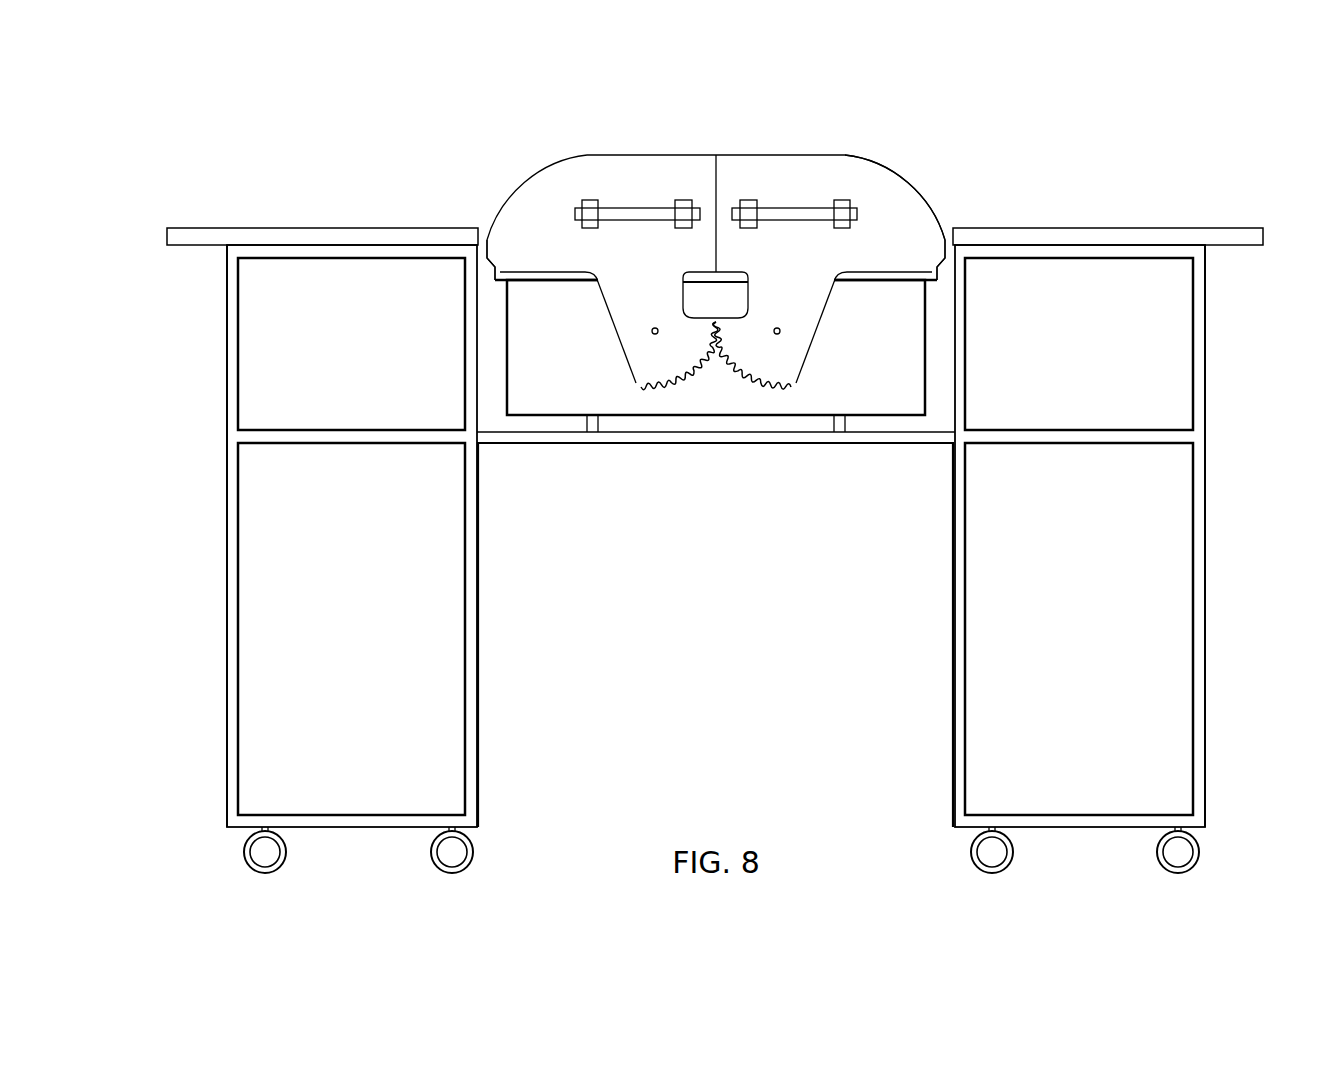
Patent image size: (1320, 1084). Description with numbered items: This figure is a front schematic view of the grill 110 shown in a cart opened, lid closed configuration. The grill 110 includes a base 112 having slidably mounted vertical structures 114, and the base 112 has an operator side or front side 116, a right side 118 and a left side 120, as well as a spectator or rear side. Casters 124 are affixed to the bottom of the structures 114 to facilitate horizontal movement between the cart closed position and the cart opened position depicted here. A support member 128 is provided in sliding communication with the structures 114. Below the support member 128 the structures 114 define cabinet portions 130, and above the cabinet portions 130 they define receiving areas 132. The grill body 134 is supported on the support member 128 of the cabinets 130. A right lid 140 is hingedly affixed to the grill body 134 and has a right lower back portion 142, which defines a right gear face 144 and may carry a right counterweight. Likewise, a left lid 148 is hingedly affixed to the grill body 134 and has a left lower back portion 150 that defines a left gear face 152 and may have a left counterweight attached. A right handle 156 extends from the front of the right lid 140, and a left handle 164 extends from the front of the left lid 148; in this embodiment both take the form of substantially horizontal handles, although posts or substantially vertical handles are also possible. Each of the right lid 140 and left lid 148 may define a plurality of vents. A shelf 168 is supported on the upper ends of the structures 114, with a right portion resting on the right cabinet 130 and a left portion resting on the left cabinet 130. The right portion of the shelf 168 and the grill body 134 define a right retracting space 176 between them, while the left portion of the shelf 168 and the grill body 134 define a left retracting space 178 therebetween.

The grill 110 is at (448, 130).
The base 112 is at (165, 645).
The vertical structures 114 is at (250, 575).
The front side 116 is at (697, 654).
The right side 118 is at (1206, 708).
The left side 120 is at (227, 708).
The casters 124 is at (265, 872).
The support member 128 is at (652, 445).
The cabinet portions 130 is at (333, 644).
The receiving areas 132 is at (333, 358).
The grill body 134 is at (507, 330).
The right lid 140 is at (885, 178).
The right lower back portion 142 is at (814, 322).
The right gear face 144 is at (781, 387).
The left lid 148 is at (545, 178).
The left lower back portion 150 is at (618, 322).
The left gear face 152 is at (651, 387).
The right handle 156 is at (792, 222).
The left handle 164 is at (640, 222).
The shelf 168 is at (183, 227).
The right retracting space 176 is at (943, 220).
The left retracting space 178 is at (487, 220).